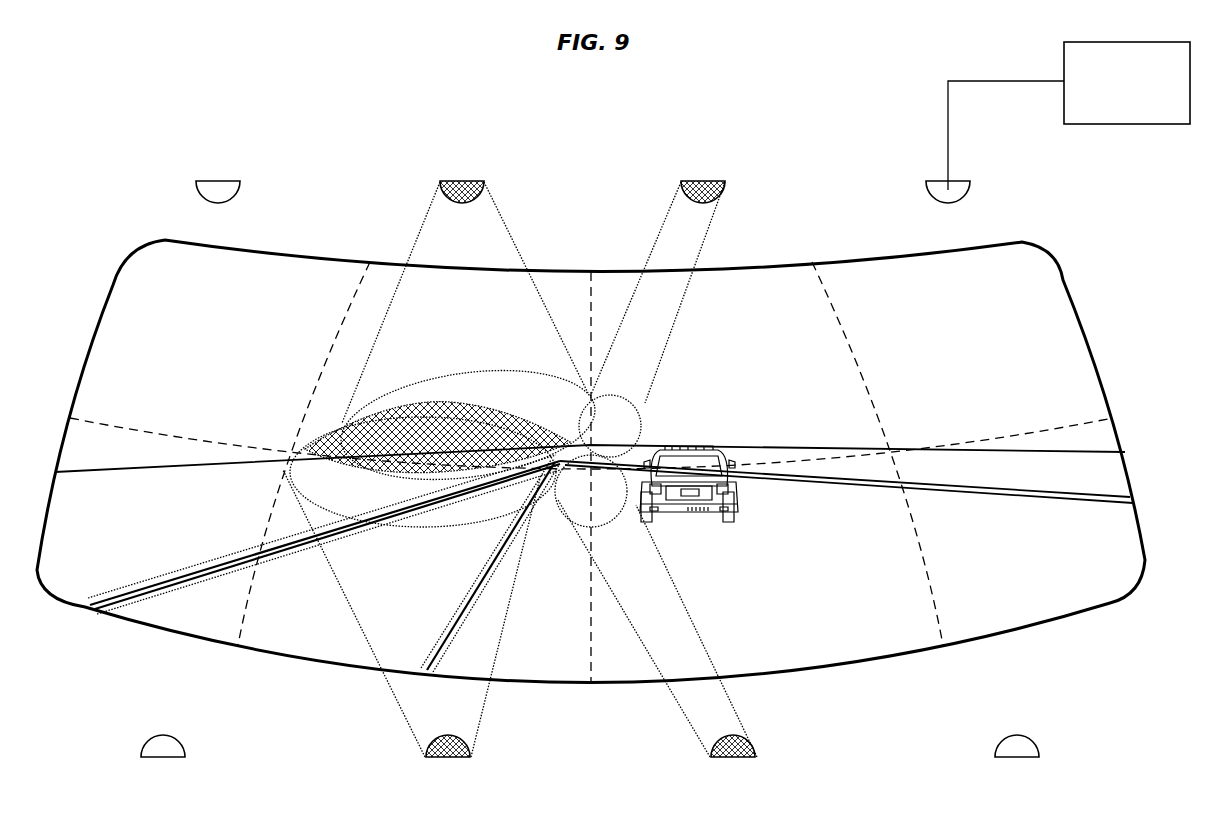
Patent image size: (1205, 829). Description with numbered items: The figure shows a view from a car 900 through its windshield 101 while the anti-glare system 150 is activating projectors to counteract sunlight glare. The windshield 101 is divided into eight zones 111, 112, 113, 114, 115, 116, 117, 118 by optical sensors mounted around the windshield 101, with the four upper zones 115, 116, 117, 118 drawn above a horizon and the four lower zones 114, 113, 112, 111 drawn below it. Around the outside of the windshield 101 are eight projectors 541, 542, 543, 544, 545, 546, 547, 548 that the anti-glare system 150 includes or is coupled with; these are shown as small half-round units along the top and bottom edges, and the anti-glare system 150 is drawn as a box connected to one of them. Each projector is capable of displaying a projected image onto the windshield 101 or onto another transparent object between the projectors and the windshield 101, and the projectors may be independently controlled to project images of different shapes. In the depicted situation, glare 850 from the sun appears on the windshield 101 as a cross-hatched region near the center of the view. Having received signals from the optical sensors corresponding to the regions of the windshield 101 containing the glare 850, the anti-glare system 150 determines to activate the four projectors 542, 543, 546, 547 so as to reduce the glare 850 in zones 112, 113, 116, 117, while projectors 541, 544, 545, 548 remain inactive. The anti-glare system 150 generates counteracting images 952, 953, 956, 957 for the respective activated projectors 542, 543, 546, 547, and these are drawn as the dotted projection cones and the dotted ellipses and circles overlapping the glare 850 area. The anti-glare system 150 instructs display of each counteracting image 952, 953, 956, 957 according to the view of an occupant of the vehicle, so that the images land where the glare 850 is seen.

The car 900 is at (238, 112).
The windshield 101 is at (1100, 362).
The anti-glare system 150 is at (1127, 83).
The zone 111 is at (1035, 532).
The zone 112 is at (767, 599).
The zone 113 is at (408, 618).
The zone 114 is at (153, 518).
The zone 115 is at (207, 356).
The zone 116 is at (473, 294).
The zone 117 is at (750, 356).
The zone 118 is at (965, 335).
The projector 541 is at (1020, 752).
The projector 542 is at (745, 752).
The projector 543 is at (458, 752).
The projector 544 is at (160, 752).
The projector 545 is at (205, 181).
The projector 546 is at (455, 181).
The projector 547 is at (718, 181).
The projector 548 is at (963, 181).
The glare 850 is at (461, 402).
The counteracting image 952 is at (260, 562).
The counteracting image 953 is at (405, 527).
The counteracting image 956 is at (604, 398).
The counteracting image 957 is at (424, 385).